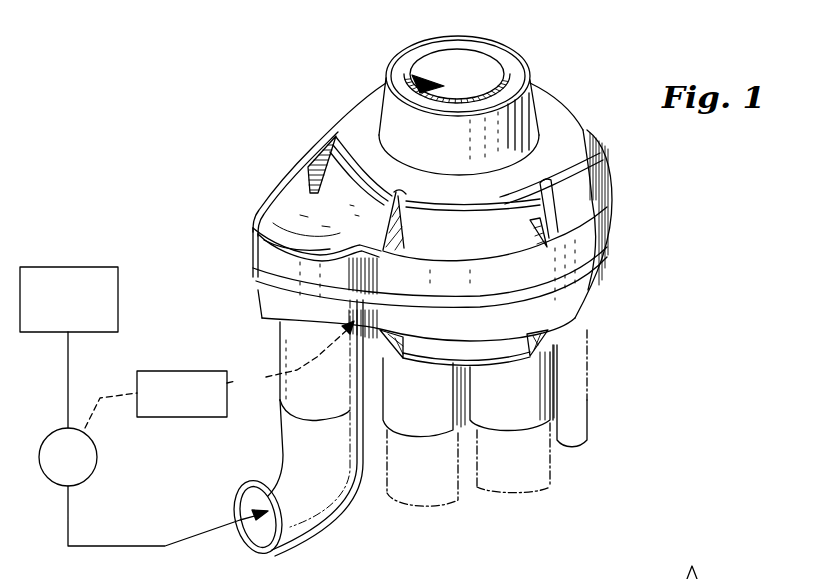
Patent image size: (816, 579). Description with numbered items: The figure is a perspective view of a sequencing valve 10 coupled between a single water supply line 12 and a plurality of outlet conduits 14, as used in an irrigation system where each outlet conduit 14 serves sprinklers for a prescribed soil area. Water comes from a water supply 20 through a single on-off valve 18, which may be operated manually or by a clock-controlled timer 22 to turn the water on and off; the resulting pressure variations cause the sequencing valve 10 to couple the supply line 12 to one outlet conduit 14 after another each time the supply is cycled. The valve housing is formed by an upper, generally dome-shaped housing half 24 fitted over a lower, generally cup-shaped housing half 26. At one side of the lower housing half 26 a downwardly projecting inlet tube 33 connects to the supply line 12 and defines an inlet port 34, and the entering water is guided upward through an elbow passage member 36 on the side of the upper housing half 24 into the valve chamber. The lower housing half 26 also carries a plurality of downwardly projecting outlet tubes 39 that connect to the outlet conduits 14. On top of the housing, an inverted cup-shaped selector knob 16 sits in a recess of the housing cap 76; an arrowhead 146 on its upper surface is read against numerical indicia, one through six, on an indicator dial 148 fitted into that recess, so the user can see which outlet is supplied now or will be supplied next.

The sequencing valve 10 is at (597, 64).
The water supply line 12 is at (323, 523).
The outlet conduits 14 is at (600, 416).
The selector knob 16 is at (474, 62).
The on-off valve 18 is at (96, 460).
The water supply 20 is at (97, 267).
The clock-controlled timer 22 is at (175, 371).
The upper housing half 24 is at (577, 198).
The lower housing half 26 is at (572, 338).
The inlet tube 33 is at (318, 410).
The inlet port 34 is at (290, 353).
The elbow passage member 36 is at (291, 210).
The outlet tubes 39 is at (533, 407).
The housing cap 76 is at (398, 127).
The arrowhead 146 is at (412, 74).
The indicator dial 148 is at (517, 81).